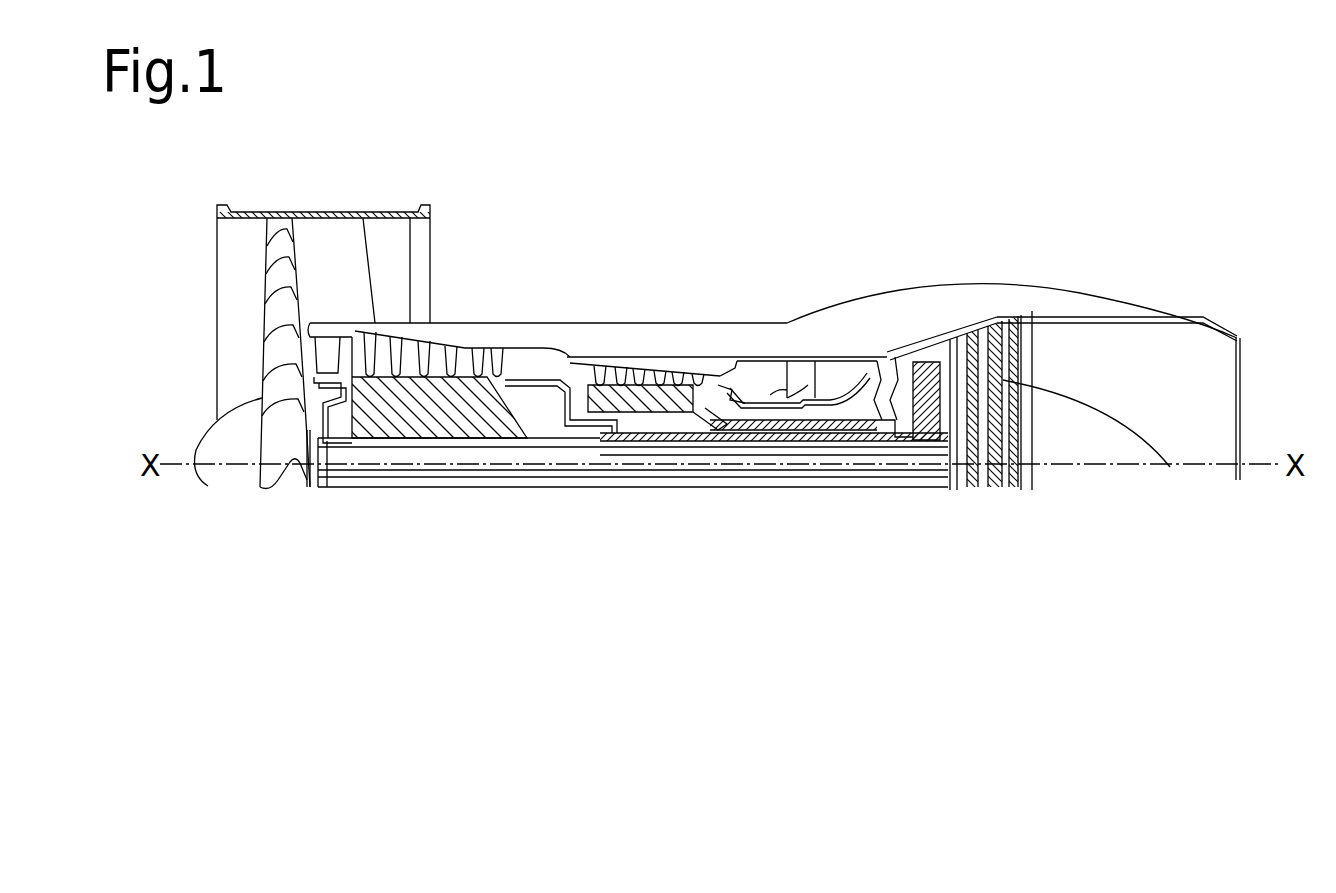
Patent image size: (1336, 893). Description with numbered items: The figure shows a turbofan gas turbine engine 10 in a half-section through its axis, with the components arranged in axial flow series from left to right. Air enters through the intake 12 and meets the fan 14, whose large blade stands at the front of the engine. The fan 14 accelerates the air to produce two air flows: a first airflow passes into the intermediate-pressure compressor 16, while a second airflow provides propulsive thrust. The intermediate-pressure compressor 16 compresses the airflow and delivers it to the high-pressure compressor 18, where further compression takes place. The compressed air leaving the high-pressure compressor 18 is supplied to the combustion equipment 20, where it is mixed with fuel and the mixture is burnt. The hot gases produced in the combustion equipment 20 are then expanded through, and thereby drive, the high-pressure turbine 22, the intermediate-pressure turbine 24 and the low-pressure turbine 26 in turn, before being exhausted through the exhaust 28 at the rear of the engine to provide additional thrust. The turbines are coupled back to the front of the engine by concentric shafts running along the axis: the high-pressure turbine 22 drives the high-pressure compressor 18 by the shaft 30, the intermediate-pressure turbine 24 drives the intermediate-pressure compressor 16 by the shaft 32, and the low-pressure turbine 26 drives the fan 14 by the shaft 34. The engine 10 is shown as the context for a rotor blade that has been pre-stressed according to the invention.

The turbofan gas turbine engine 10 is at (635, 230).
The intake 12 is at (182, 322).
The fan 14 is at (298, 250).
The intermediate-pressure compressor 16 is at (440, 388).
The high-pressure compressor 18 is at (640, 358).
The combustion equipment 20 is at (803, 344).
The high-pressure turbine 22 is at (882, 355).
The intermediate-pressure turbine 24 is at (924, 355).
The low-pressure turbine 26 is at (1027, 358).
The exhaust 28 is at (1213, 420).
The shaft 30 is at (843, 433).
The shaft 32 is at (723, 438).
The shaft 34 is at (657, 472).